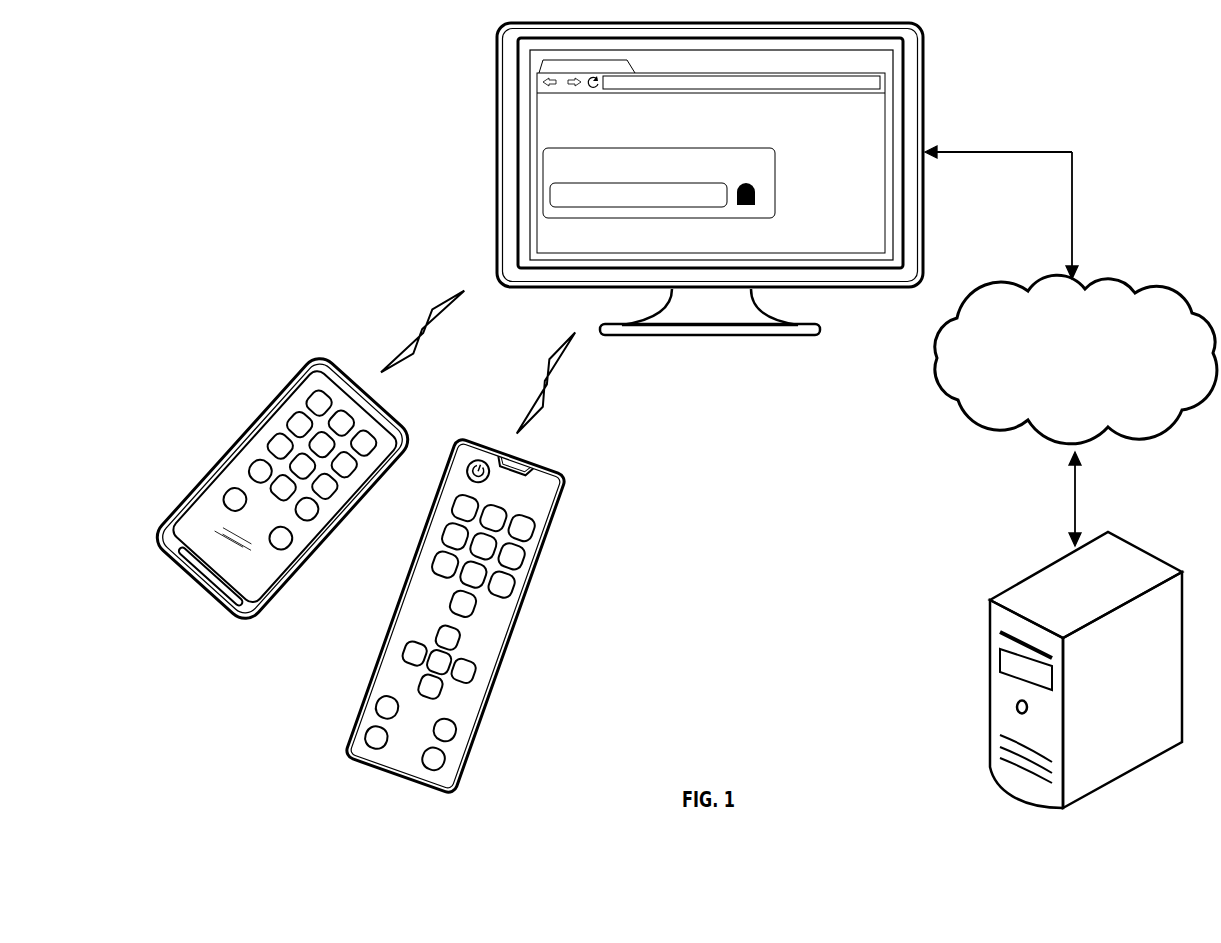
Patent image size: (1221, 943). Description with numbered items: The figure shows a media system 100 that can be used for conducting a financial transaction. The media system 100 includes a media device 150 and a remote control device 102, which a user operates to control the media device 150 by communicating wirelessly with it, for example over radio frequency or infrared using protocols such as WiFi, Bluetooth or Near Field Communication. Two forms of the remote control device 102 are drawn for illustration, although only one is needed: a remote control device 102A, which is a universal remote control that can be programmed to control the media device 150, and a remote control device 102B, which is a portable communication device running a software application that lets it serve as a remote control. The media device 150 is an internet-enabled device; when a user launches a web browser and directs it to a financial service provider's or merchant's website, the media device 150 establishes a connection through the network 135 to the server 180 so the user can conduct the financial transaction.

The media system 100 is at (306, 128).
The remote control device 102 is at (360, 700).
The remote control device 102A is at (486, 702).
The remote control device 102B is at (272, 612).
The network 135 is at (1071, 346).
The media device 150 is at (926, 50).
The server 180 is at (1086, 670).